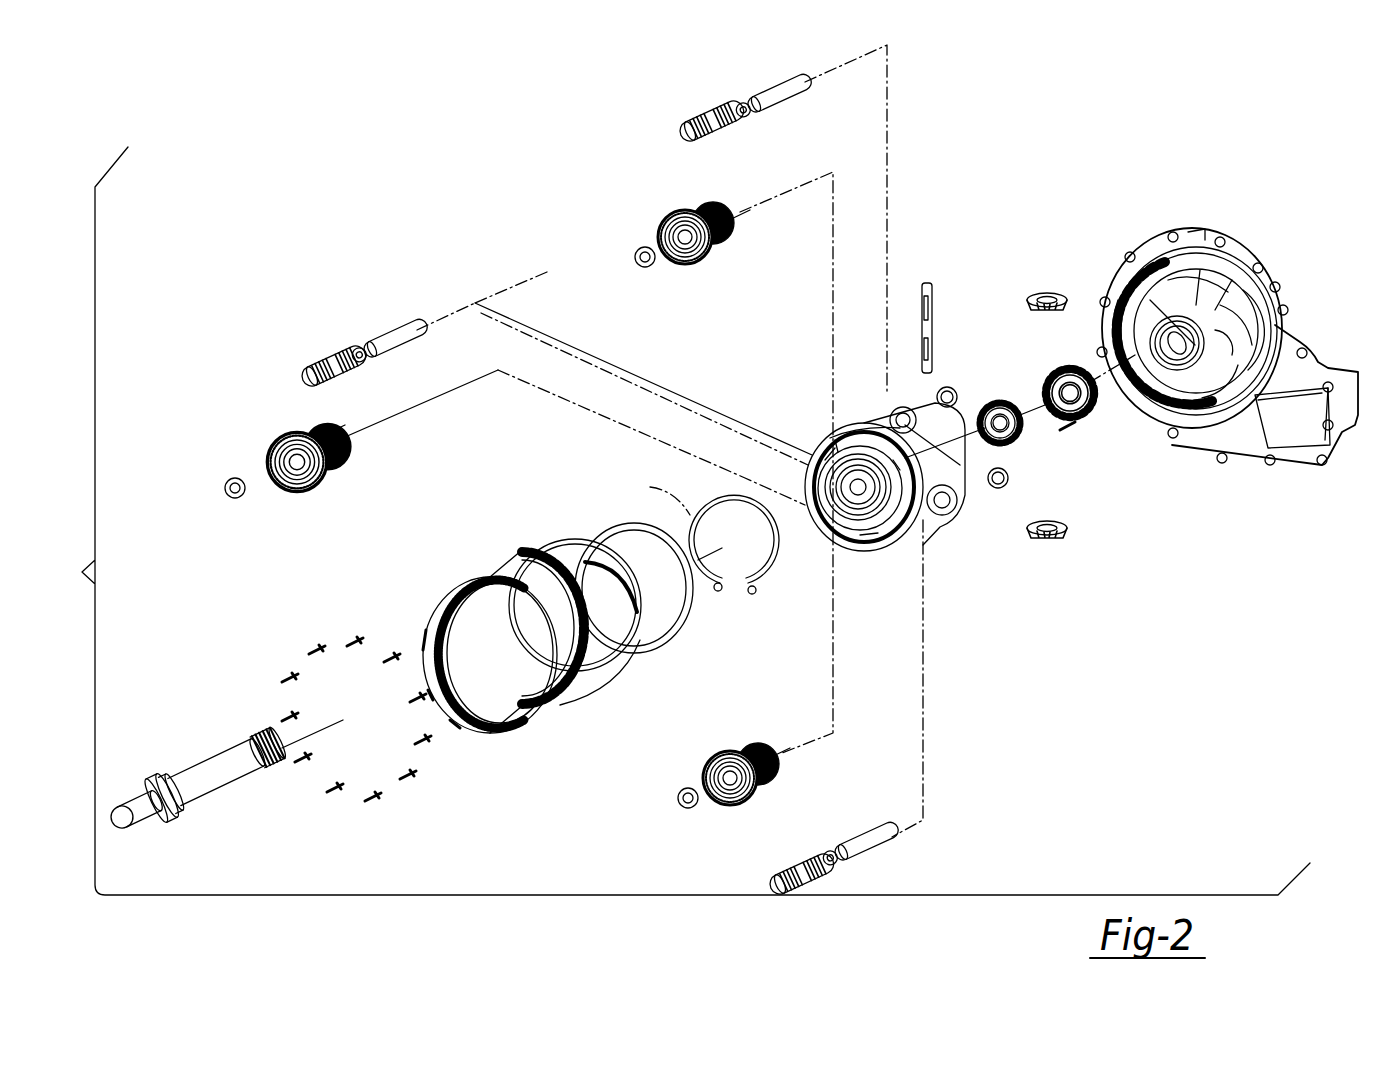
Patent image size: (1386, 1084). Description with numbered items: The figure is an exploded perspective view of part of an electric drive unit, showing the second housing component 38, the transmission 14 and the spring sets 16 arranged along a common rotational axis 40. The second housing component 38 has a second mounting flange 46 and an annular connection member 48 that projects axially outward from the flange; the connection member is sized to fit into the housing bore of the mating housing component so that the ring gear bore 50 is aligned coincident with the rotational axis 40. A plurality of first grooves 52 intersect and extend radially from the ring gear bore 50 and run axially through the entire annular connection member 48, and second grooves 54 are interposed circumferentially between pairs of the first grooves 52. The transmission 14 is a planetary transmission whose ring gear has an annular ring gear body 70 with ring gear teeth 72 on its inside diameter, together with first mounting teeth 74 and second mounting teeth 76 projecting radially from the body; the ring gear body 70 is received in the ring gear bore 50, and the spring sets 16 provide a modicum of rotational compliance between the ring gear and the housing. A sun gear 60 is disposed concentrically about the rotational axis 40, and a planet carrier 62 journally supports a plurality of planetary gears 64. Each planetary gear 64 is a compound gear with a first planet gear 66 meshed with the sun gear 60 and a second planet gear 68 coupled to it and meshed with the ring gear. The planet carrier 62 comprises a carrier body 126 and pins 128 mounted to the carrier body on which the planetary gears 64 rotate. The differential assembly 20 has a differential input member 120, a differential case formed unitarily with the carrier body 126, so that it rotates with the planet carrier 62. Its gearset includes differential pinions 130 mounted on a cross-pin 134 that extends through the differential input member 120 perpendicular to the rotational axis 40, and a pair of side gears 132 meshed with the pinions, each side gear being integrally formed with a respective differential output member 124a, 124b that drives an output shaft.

The transmission 14 is at (726, 82).
The spring sets 16 is at (282, 717).
The differential assembly 20 is at (998, 283).
The second housing component 38 is at (1218, 342).
The rotational axis 40 is at (698, 533).
The second mounting flange 46 is at (1215, 355).
The annular connection member 48 is at (1200, 258).
The ring gear bore 50 is at (1195, 395).
The first grooves 52 is at (1150, 275).
The second grooves 54 is at (1110, 345).
The sun gear 60 is at (255, 743).
The planet carrier 62 is at (873, 468).
The planetary gears 64 is at (268, 418).
The first planet gear 66 is at (330, 478).
The second planet gear 68 is at (340, 450).
The ring gear body 70 is at (469, 672).
The ring gear teeth 72 is at (470, 720).
The first mounting teeth 74 is at (505, 565).
The second mounting teeth 76 is at (480, 570).
The differential input member 120 is at (937, 395).
The differential output member 124a is at (1025, 440).
The differential output member 124b is at (1068, 365).
The carrier body 126 is at (833, 430).
The pins 128 is at (778, 90).
The differential pinions 130 is at (1040, 293).
The side gears 132 is at (1027, 442).
The cross-pin 134 is at (928, 280).